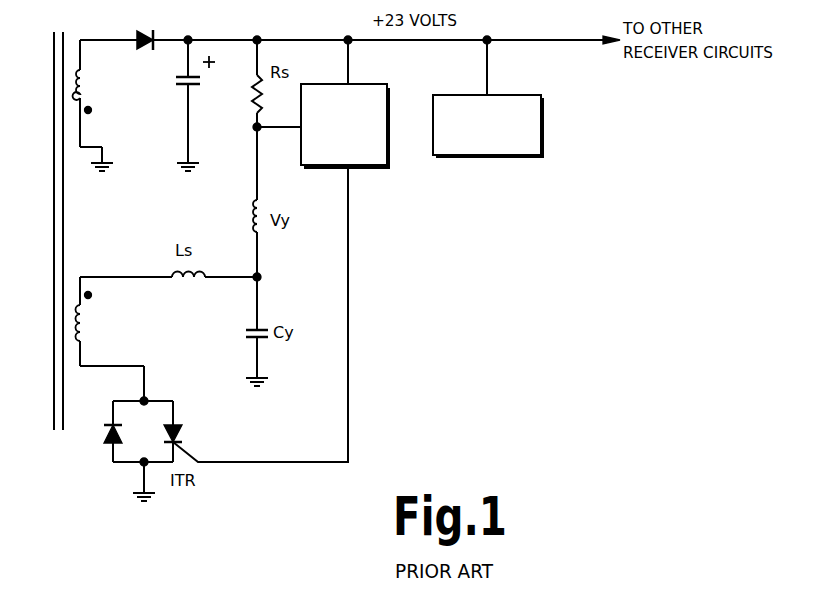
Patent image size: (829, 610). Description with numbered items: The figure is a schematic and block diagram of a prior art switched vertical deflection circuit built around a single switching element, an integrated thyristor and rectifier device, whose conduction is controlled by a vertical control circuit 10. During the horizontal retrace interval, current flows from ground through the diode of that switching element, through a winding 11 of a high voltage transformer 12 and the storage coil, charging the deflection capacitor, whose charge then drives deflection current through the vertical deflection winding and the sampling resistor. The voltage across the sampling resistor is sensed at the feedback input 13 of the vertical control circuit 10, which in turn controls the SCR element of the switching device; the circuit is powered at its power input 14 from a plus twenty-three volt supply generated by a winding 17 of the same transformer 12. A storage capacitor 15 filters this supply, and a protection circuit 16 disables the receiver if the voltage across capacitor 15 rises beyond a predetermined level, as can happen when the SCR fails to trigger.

The vertical control circuit 10 is at (392, 88).
The winding 11 is at (84, 330).
The high voltage transformer 12 is at (48, 229).
The feedback input 13 is at (297, 129).
The power input 14 is at (351, 83).
The storage capacitor 15 is at (203, 84).
The protection circuit 16 is at (545, 90).
The winding 17 is at (85, 76).